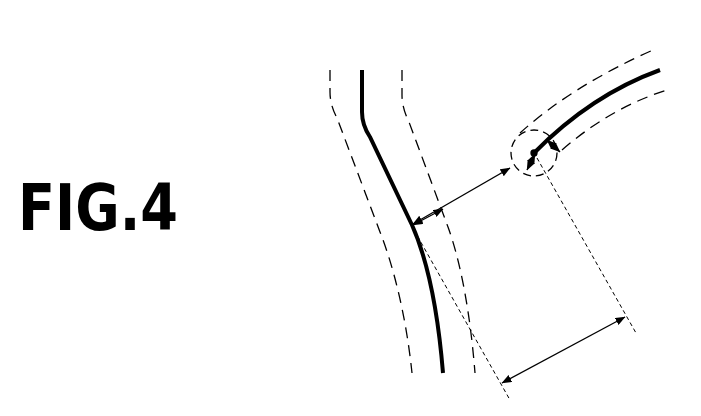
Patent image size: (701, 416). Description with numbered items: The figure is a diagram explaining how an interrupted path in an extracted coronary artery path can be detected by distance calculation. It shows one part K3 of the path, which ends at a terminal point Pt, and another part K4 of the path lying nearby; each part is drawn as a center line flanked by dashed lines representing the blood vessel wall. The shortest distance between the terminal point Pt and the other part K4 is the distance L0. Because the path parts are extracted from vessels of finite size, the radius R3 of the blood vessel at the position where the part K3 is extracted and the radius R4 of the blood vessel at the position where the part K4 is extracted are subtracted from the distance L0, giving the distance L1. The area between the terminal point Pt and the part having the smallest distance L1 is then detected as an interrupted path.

The part of the path K4 is at (378, 147).
The part of the path K3 is at (632, 82).
The terminal point Pt is at (534, 151).
The distance L1 is at (482, 178).
The radius of the blood vessel R4 is at (431, 214).
The radius of the blood vessel R3 is at (531, 167).
The distance L0 is at (525, 279).